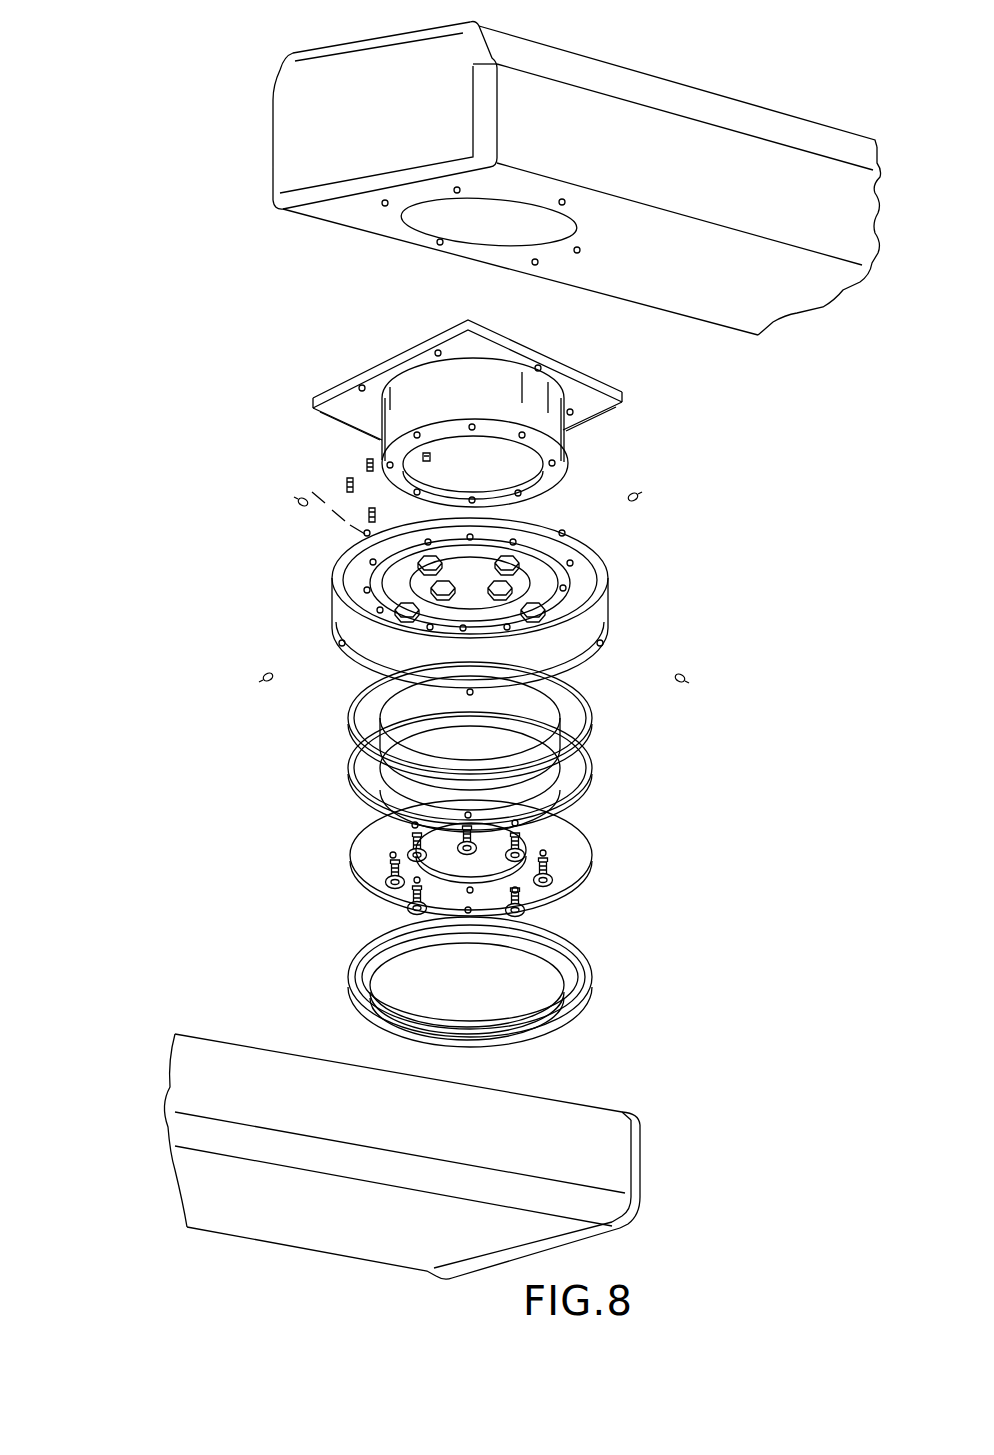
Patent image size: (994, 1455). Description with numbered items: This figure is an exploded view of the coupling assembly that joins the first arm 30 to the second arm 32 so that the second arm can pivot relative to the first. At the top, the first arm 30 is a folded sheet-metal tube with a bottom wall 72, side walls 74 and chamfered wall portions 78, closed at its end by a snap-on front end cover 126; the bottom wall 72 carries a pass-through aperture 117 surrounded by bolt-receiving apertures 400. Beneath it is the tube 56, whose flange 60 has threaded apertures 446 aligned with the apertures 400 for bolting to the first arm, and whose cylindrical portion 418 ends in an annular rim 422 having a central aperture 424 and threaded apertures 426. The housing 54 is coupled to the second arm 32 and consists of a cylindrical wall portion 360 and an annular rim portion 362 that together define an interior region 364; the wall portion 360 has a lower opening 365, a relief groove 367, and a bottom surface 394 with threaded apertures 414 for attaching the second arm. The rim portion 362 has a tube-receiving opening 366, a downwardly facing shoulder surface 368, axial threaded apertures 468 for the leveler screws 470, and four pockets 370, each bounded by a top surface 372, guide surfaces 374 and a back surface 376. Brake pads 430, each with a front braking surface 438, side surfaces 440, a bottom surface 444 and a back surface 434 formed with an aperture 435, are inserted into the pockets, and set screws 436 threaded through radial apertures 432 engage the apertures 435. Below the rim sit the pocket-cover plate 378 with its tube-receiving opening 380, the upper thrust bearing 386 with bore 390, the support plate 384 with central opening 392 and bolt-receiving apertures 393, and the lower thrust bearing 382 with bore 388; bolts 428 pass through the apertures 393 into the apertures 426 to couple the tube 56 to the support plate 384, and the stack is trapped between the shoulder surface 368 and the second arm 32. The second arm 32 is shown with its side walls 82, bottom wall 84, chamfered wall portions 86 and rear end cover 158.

The first arm 30 is at (262, 22).
The second arm 32 is at (139, 1112).
The housing 54 is at (290, 602).
The tube 56 is at (317, 428).
The flange 60 is at (597, 398).
The bottom wall 72 is at (717, 262).
The side walls 74 is at (700, 148).
The chamfered wall portions 78 is at (625, 80).
The side walls 82 is at (602, 1157).
The bottom wall 84 is at (327, 1227).
The chamfered wall portions 86 is at (293, 1153).
The pass-through aperture 117 is at (495, 222).
The front end cover 126 is at (305, 108).
The rear end cover 158 is at (575, 1242).
The cylindrical wall portion 360 is at (597, 592).
The annular rim portion 362 is at (402, 592).
The interior region 364 is at (382, 670).
The lower opening 365 is at (573, 645).
The tube-receiving opening 366 is at (343, 607).
The relief groove 367 is at (613, 647).
The shoulder surface 368 is at (603, 575).
The pockets 370 is at (352, 567).
The top surface 372 is at (368, 532).
The guide surfaces 374 is at (580, 518).
The back surface 376 is at (603, 623).
The pocket-cover plate 378 is at (457, 726).
The tube-receiving opening 380 is at (537, 705).
The lower thrust bearing 382 is at (427, 982).
The support plate 384 is at (456, 862).
The upper thrust bearing 386 is at (427, 772).
The bore 388 is at (408, 985).
The bore 390 is at (375, 795).
The central opening 392 is at (492, 857).
The bolt-receiving apertures 393 is at (515, 822).
The bottom surface 394 is at (300, 680).
The bolt-receiving apertures 400 is at (385, 203).
The threaded apertures 414 is at (298, 672).
The cylindrical portion 418 is at (565, 426).
The annular rim 422 is at (572, 463).
The central aperture 424 is at (430, 458).
The threaded apertures 426 is at (520, 434).
The bolts 428 is at (390, 868).
The brake pads 430 is at (593, 538).
The threaded apertures 432 is at (350, 483).
The back surface 434 is at (483, 444).
The aperture 435 is at (525, 520).
The set screws 436 is at (297, 502).
The front braking surface 438 is at (462, 640).
The side surfaces 440 is at (470, 583).
The bottom surface 444 is at (617, 560).
The threaded apertures 446 is at (385, 345).
The threaded apertures 468 is at (350, 542).
The leveler screws 470 is at (367, 466).